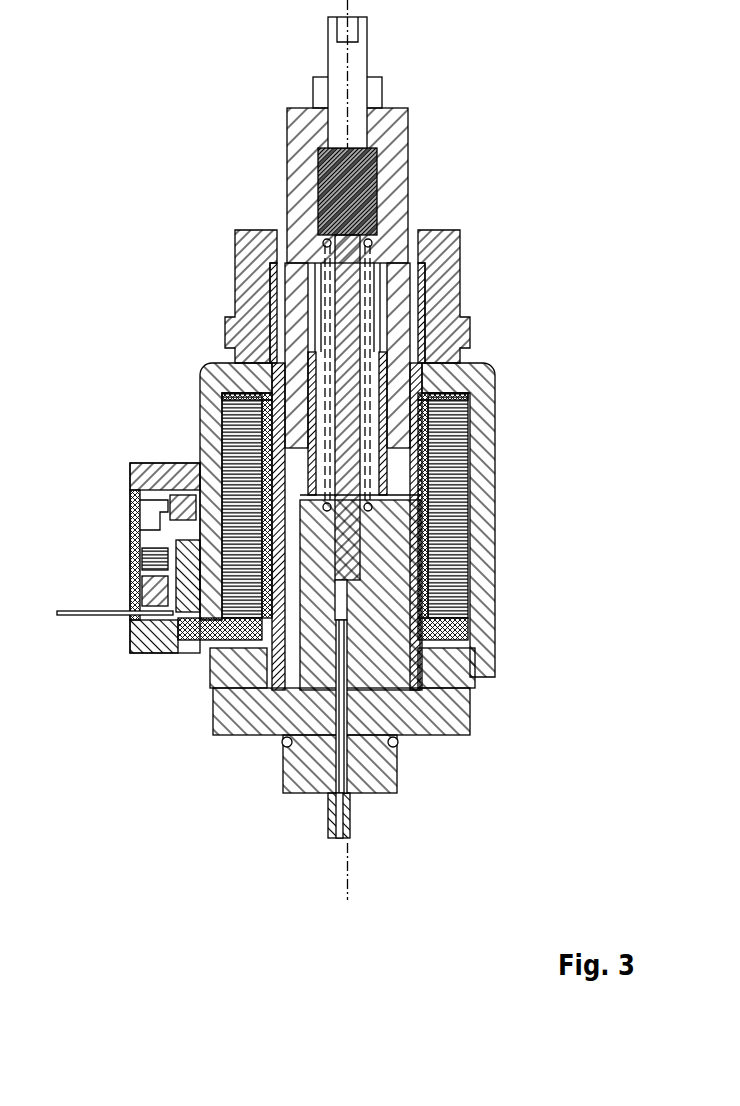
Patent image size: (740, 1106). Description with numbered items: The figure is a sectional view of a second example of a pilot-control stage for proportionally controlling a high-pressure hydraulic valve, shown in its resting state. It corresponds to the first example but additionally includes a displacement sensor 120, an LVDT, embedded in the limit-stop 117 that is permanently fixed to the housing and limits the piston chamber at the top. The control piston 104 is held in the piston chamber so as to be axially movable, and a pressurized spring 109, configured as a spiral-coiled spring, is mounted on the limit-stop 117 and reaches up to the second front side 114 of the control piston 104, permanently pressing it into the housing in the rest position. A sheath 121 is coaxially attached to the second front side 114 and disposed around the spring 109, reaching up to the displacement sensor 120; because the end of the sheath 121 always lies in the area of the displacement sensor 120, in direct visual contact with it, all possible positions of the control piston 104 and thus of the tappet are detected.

The control piston 104 is at (386, 695).
The spring 109 is at (368, 412).
The second front side 114 is at (432, 477).
The limit-stop 117 is at (398, 152).
The displacement sensor 120 is at (388, 330).
The sheath 121 is at (387, 460).